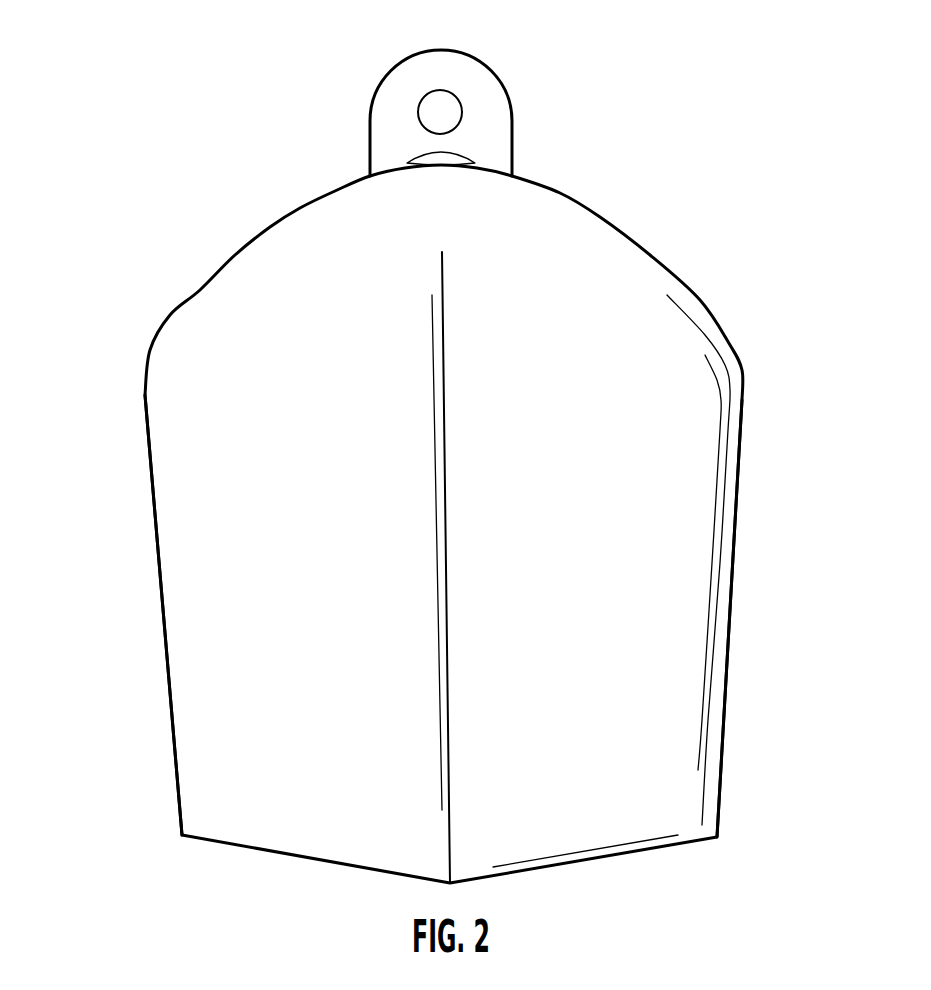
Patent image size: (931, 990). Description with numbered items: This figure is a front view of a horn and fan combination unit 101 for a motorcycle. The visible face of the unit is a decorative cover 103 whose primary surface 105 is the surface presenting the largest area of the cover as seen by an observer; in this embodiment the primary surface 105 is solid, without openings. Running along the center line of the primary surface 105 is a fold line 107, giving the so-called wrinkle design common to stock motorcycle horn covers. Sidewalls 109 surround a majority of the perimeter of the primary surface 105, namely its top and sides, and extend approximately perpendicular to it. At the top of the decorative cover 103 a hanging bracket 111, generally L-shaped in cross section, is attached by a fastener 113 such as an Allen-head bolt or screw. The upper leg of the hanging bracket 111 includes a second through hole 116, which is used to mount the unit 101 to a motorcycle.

The horn and fan combination unit 101 is at (145, 110).
The decorative cover 103 is at (230, 321).
The primary surface 105 is at (531, 401).
The fold line 107 is at (443, 487).
The sidewalls 109 is at (250, 240).
The hanging bracket 111 is at (498, 106).
The fastener 113 is at (418, 154).
The second through hole 116 is at (441, 100).